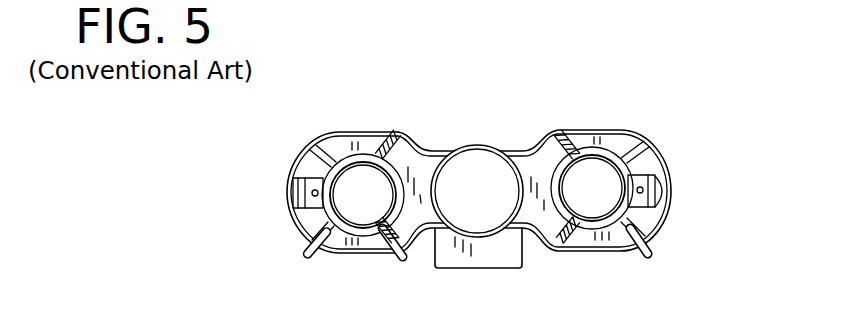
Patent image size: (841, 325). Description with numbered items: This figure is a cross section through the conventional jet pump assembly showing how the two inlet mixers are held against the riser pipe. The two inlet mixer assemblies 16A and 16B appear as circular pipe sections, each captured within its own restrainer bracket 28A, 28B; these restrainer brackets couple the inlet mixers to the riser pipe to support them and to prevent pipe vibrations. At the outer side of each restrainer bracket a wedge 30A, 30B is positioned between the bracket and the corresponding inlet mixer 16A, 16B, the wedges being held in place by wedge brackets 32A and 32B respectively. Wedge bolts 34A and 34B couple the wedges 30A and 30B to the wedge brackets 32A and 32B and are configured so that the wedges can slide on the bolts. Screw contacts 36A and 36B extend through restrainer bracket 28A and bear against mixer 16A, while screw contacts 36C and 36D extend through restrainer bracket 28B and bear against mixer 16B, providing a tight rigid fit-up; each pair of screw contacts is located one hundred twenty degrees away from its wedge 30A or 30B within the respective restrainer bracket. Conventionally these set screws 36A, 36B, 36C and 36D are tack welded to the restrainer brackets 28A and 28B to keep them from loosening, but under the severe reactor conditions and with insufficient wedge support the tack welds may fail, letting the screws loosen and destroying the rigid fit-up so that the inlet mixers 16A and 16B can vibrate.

The inlet mixer assembly 16A is at (595, 164).
The inlet mixer assembly 16B is at (353, 178).
The restrainer bracket 28A is at (660, 150).
The restrainer bracket 28B is at (295, 189).
The wedge 30A is at (658, 174).
The wedge 30B is at (293, 168).
The wedge bracket 32A is at (661, 228).
The wedge bracket 32B is at (300, 237).
The wedge bolt 34A is at (656, 197).
The wedge bolt 34B is at (298, 214).
The screw contact 36A is at (561, 142).
The screw contact 36B is at (558, 248).
The screw contact 36C is at (393, 146).
The screw contact 36D is at (395, 252).